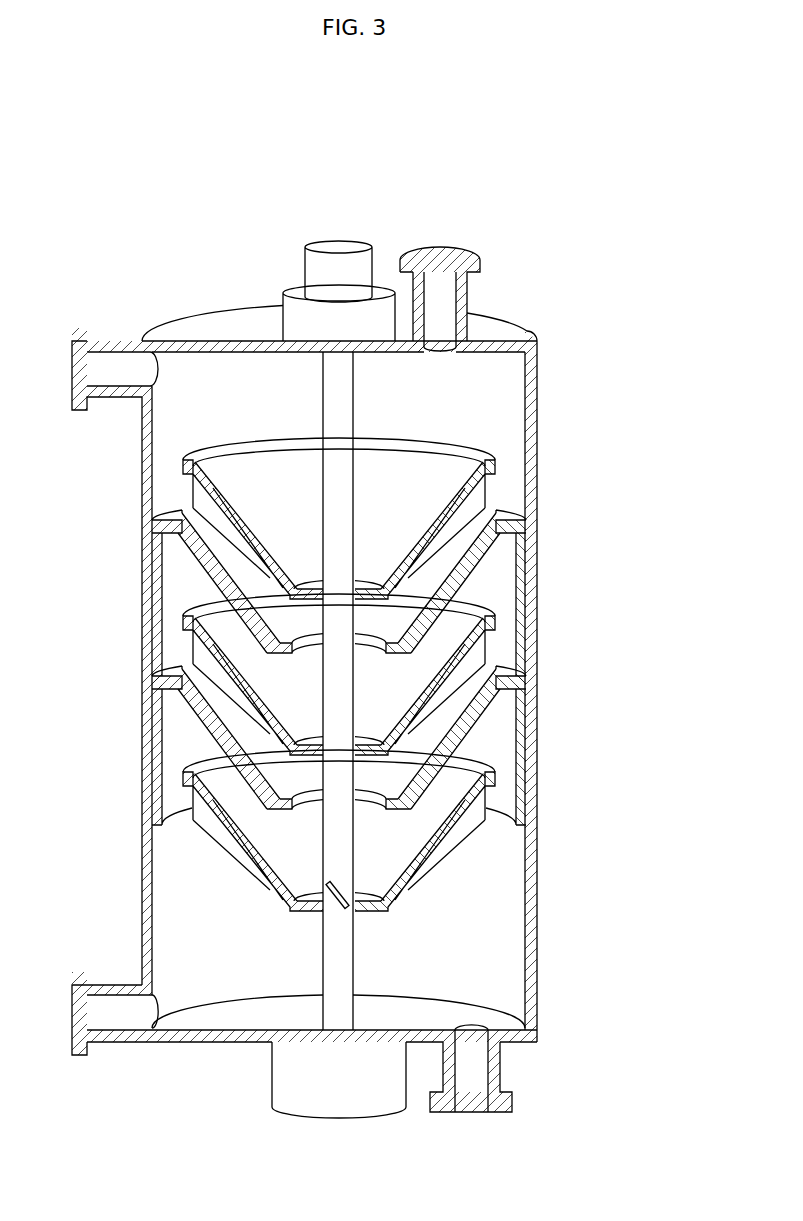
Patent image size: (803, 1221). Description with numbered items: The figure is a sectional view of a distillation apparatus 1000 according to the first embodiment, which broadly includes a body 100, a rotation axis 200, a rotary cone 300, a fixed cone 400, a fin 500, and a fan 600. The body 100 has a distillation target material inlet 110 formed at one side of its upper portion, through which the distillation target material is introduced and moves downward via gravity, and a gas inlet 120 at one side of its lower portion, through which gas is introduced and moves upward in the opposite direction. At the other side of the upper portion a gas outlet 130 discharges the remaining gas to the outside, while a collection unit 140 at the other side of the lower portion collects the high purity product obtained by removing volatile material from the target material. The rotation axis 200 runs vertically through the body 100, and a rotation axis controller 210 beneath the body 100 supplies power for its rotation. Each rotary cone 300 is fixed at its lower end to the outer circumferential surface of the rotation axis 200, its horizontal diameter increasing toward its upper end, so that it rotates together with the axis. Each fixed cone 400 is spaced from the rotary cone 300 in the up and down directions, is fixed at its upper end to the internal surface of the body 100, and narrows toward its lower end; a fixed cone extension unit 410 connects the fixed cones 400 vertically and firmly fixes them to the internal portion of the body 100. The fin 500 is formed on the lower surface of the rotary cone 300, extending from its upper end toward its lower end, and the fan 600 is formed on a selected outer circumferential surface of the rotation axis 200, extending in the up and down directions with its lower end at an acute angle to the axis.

The distillation apparatus 1000 is at (491, 180).
The body 100 is at (537, 370).
The distillation target material inlet 110 is at (440, 266).
The gas inlet 120 is at (115, 1010).
The gas outlet 130 is at (120, 360).
The collection unit 140 is at (473, 1073).
The rotation axis 200 is at (338, 975).
The rotation axis controller 210 is at (272, 1090).
The rotary cone 300 is at (457, 467).
The fixed cone 400 is at (478, 563).
The fixed cone extension unit 410 is at (522, 593).
The fin 500 is at (477, 503).
The fan 600 is at (343, 892).